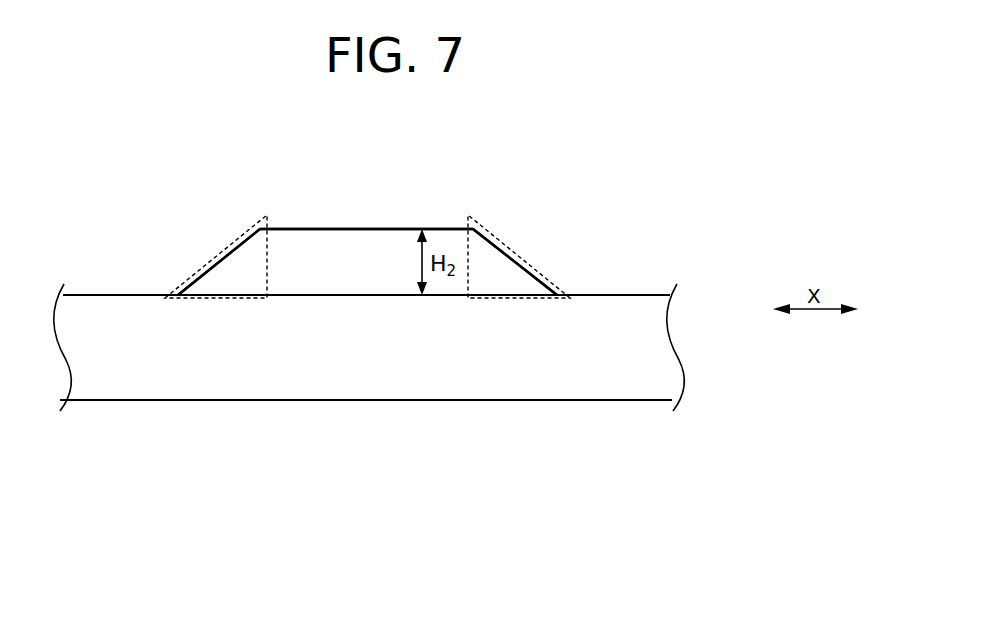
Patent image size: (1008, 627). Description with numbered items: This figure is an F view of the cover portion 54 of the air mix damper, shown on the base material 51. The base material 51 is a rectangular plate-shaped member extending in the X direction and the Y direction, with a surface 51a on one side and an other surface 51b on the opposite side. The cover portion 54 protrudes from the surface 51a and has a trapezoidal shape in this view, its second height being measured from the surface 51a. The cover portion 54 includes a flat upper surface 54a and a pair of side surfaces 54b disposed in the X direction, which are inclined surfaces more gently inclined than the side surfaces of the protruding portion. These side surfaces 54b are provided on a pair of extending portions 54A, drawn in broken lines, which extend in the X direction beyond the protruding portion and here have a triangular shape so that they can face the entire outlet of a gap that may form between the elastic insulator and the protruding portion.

The base material 51 is at (659, 348).
The surface 51a is at (623, 294).
The other surface 51b is at (603, 401).
The cover portion 54 is at (307, 218).
The upper surface 54a is at (382, 228).
The side surfaces 54b is at (212, 262).
The extending portions 54A is at (245, 233).